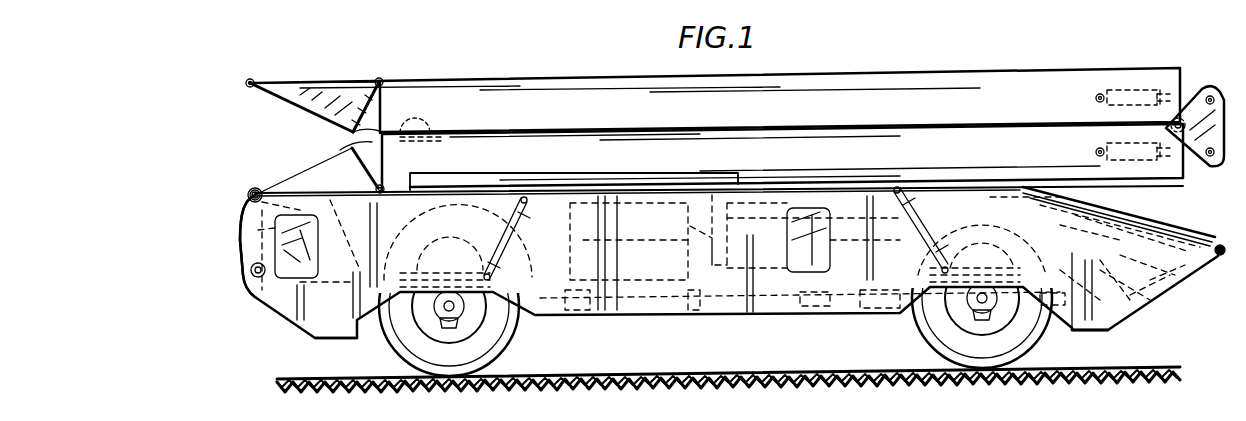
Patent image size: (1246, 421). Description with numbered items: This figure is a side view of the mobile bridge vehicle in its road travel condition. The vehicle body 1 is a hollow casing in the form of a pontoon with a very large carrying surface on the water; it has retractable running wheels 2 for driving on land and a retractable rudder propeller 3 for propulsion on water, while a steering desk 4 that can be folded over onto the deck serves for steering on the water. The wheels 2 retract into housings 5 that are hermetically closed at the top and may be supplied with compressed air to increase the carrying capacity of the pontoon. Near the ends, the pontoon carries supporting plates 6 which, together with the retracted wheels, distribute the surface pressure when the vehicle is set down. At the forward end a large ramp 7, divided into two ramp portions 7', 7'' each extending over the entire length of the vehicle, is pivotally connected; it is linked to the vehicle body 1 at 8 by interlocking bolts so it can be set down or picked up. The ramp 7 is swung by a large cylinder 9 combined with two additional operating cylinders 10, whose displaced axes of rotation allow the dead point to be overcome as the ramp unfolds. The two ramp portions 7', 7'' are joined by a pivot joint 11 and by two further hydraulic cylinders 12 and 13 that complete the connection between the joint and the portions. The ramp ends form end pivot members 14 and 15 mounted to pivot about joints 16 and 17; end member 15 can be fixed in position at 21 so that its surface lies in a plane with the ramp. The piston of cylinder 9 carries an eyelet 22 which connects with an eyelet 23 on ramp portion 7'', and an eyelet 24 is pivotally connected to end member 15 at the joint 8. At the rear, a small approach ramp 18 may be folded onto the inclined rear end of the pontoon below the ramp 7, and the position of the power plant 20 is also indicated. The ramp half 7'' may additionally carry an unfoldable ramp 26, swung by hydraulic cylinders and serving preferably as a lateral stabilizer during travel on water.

The vehicle body 1 is at (764, 314).
The running wheels 2 is at (518, 330).
The rudder propeller 3 is at (1153, 305).
The steering desk 4 is at (1125, 204).
The housings 5 is at (452, 200).
The supporting plates 6 is at (337, 340).
The ramp 7 is at (700, 108).
The ramp portion 7' is at (715, 85).
The ramp portion 7'' is at (782, 137).
The link 8 is at (236, 192).
The cylinder 9 is at (250, 240).
The operating cylinders 10 is at (280, 180).
The pivot joint 11 is at (1190, 100).
The hydraulic cylinder 12 is at (1122, 88).
The hydraulic cylinder 13 is at (1190, 165).
The end pivot member 14 is at (302, 88).
The end pivot member 15 is at (305, 172).
The joint 16 is at (382, 80).
The joint 17 is at (386, 196).
The approach ramp 18 is at (1165, 230).
The power plant 20 is at (640, 312).
The fixing position 21 is at (350, 140).
The eyelet 22 is at (416, 120).
The eyelet 23 is at (436, 113).
The eyelet 24 is at (250, 80).
The unfoldable ramp 26 is at (596, 172).